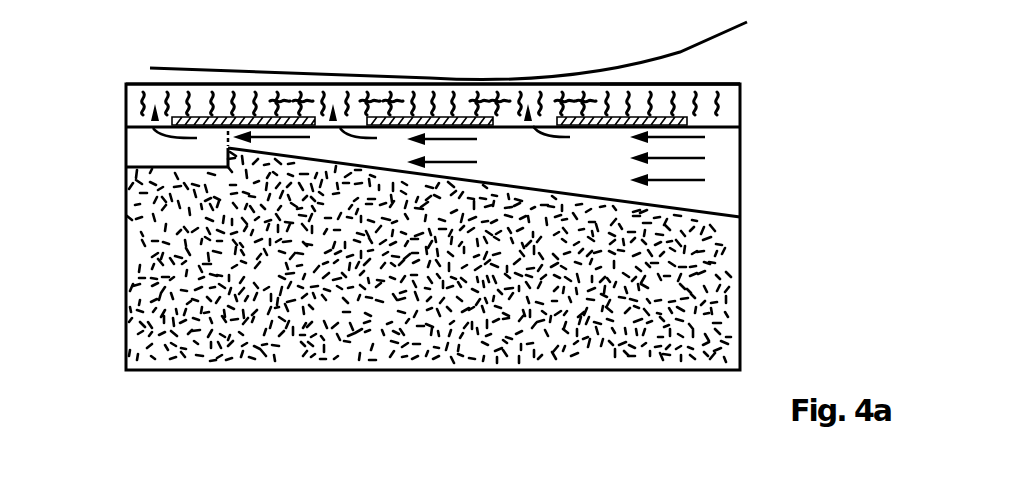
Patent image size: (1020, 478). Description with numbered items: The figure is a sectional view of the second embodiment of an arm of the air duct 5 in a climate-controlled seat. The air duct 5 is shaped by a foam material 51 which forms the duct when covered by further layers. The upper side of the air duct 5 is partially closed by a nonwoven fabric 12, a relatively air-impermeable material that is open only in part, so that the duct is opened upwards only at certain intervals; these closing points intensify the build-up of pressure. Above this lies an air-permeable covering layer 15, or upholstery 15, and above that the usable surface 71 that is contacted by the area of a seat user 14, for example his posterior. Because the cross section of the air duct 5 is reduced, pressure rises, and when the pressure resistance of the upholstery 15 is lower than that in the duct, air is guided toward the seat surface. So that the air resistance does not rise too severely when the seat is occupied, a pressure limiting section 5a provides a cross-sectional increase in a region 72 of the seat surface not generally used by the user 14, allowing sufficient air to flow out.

The region of the seat surface 72 is at (136, 78).
The area of a seat user 14 is at (705, 40).
The usable surface 71 is at (668, 80).
The air-permeable covering layer 15 is at (728, 98).
The nonwoven fabric 12 is at (690, 120).
The pressure limiting section 5a is at (138, 150).
The air duct 5 is at (730, 196).
The foam material 51 is at (730, 290).